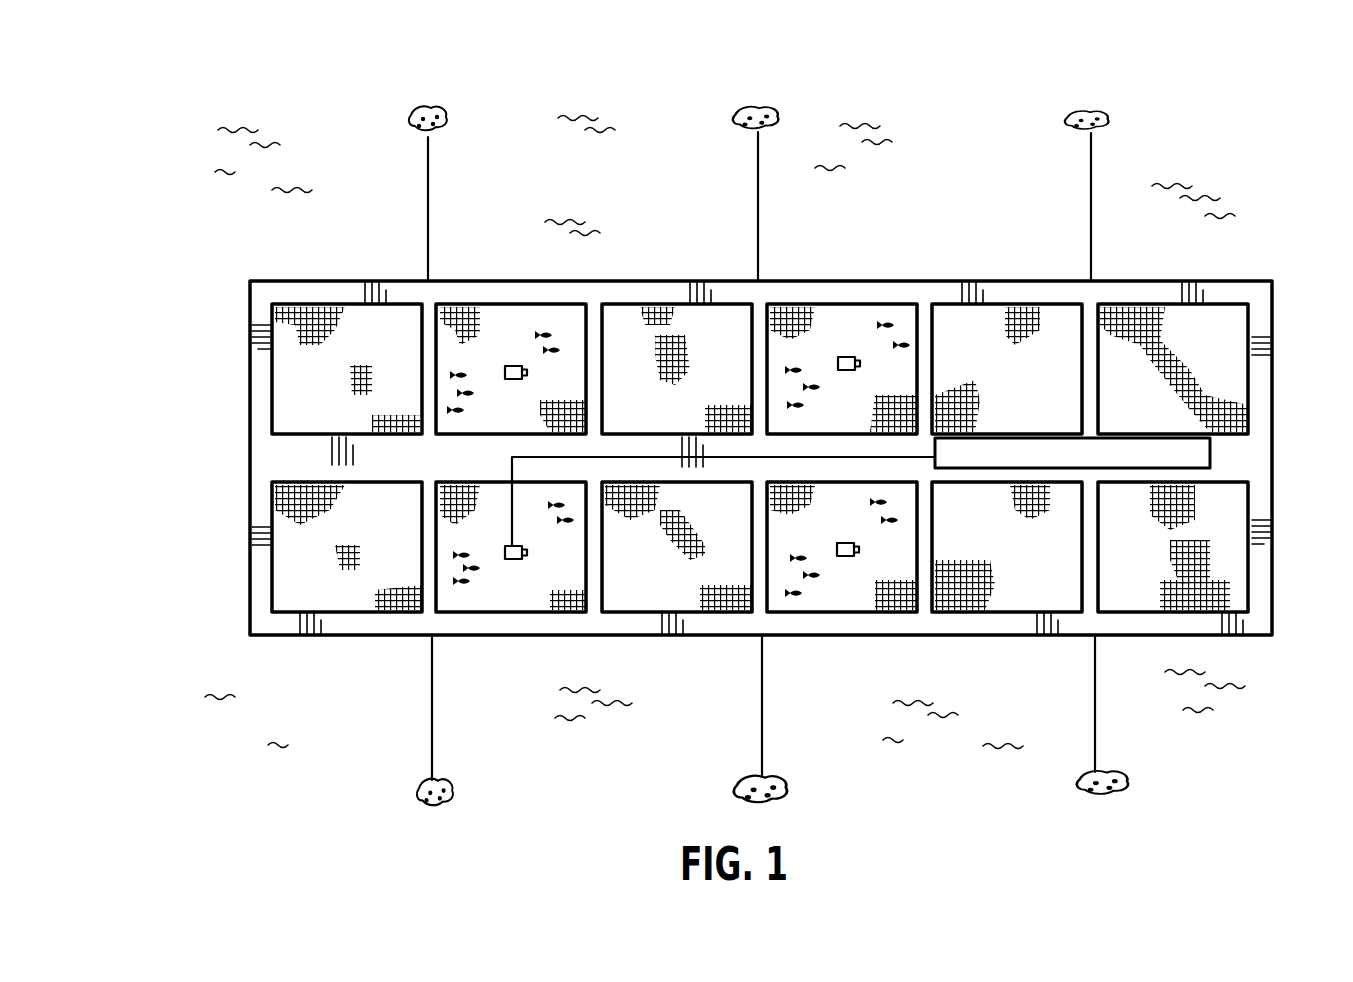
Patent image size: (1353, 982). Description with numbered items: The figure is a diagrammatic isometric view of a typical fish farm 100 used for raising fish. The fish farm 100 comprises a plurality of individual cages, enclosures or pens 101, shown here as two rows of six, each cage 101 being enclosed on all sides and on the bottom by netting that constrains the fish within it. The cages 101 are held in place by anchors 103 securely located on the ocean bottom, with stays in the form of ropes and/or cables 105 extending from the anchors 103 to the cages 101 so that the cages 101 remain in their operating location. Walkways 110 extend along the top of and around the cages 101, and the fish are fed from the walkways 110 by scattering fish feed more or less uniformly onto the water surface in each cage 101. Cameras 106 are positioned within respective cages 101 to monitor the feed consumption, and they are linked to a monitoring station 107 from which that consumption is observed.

The fish farm 100 is at (862, 242).
The cage 101 is at (282, 291).
The anchor 103 is at (410, 129).
The rope or cable 105 is at (426, 218).
The camera 106 is at (513, 380).
The monitoring station 107 is at (1050, 400).
The walkway 110 is at (945, 282).